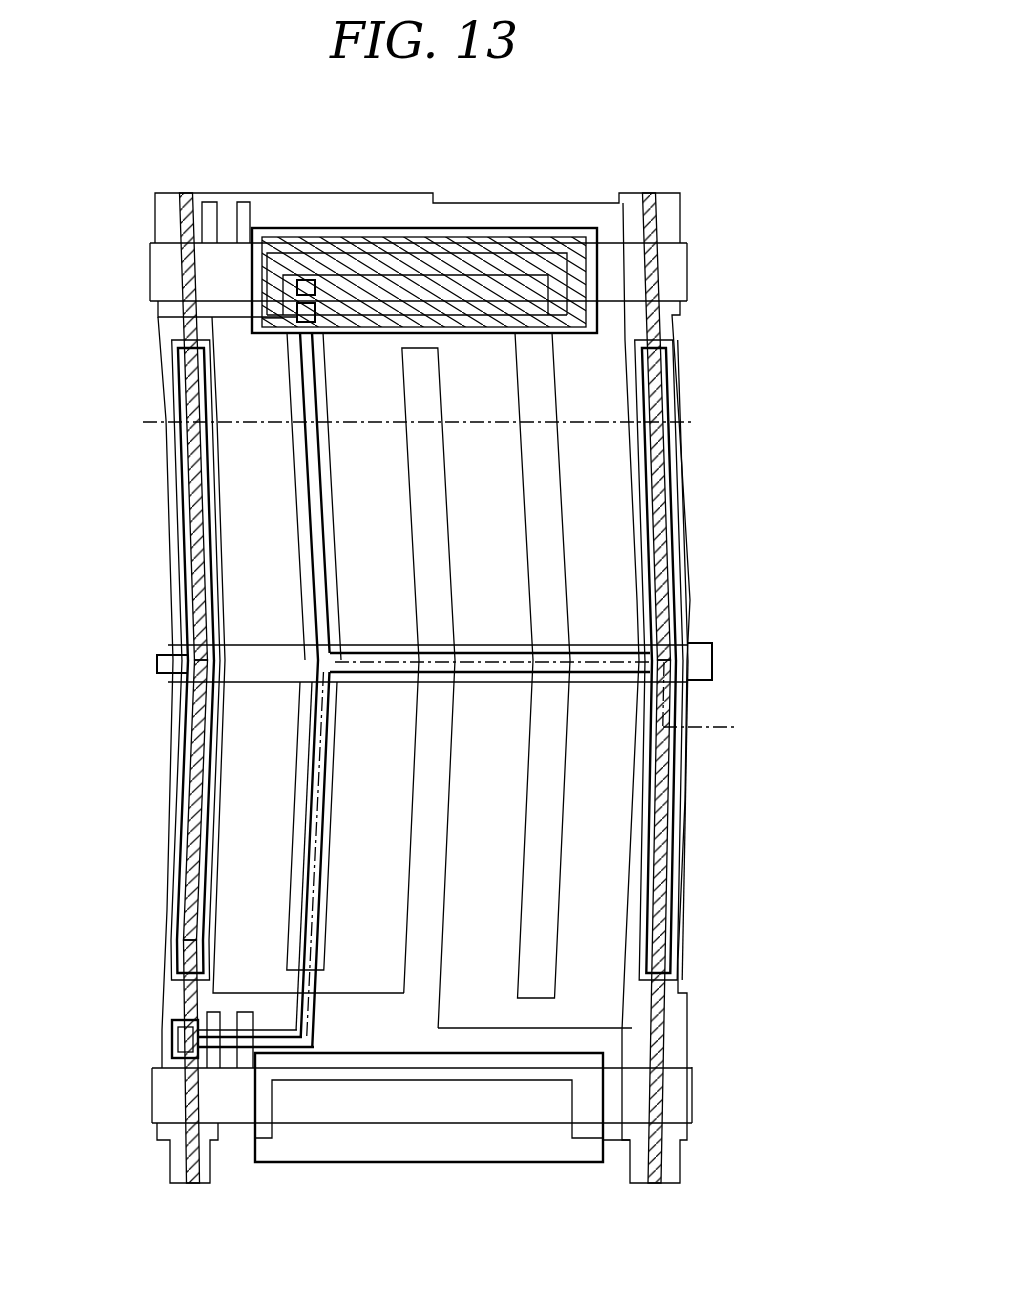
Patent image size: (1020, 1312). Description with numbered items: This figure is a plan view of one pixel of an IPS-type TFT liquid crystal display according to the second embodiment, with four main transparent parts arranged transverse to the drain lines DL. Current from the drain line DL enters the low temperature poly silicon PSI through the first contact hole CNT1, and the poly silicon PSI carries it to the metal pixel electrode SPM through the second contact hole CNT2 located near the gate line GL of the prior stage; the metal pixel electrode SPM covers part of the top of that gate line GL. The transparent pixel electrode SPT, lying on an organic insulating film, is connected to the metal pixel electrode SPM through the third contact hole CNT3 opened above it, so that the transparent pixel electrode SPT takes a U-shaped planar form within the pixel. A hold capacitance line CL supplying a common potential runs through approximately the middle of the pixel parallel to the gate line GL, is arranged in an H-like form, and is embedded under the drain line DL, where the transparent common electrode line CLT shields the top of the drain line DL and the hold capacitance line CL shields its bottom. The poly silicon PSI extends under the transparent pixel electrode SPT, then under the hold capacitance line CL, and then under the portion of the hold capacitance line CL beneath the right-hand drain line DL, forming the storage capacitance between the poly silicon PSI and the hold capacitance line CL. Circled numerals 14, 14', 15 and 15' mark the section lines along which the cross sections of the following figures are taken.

The gate line GL is at (687, 272).
The drain line DL is at (192, 612).
The hold capacitance line CL is at (196, 457).
The transparent common electrode line CLT is at (210, 515).
The transparent pixel electrode SPT is at (527, 510).
The metal pixel electrode SPM is at (510, 262).
The poly silicon PSI is at (592, 236).
The first contact hole CNT1 is at (178, 1018).
The second contact hole CNT2 is at (267, 318).
The third contact hole CNT3 is at (313, 292).
The section line 14-14' 14 is at (263, 420).
The section line 14- 14' is at (580, 420).
The section line 15-15' 15 is at (372, 855).
The section line 15- 15' is at (722, 702).